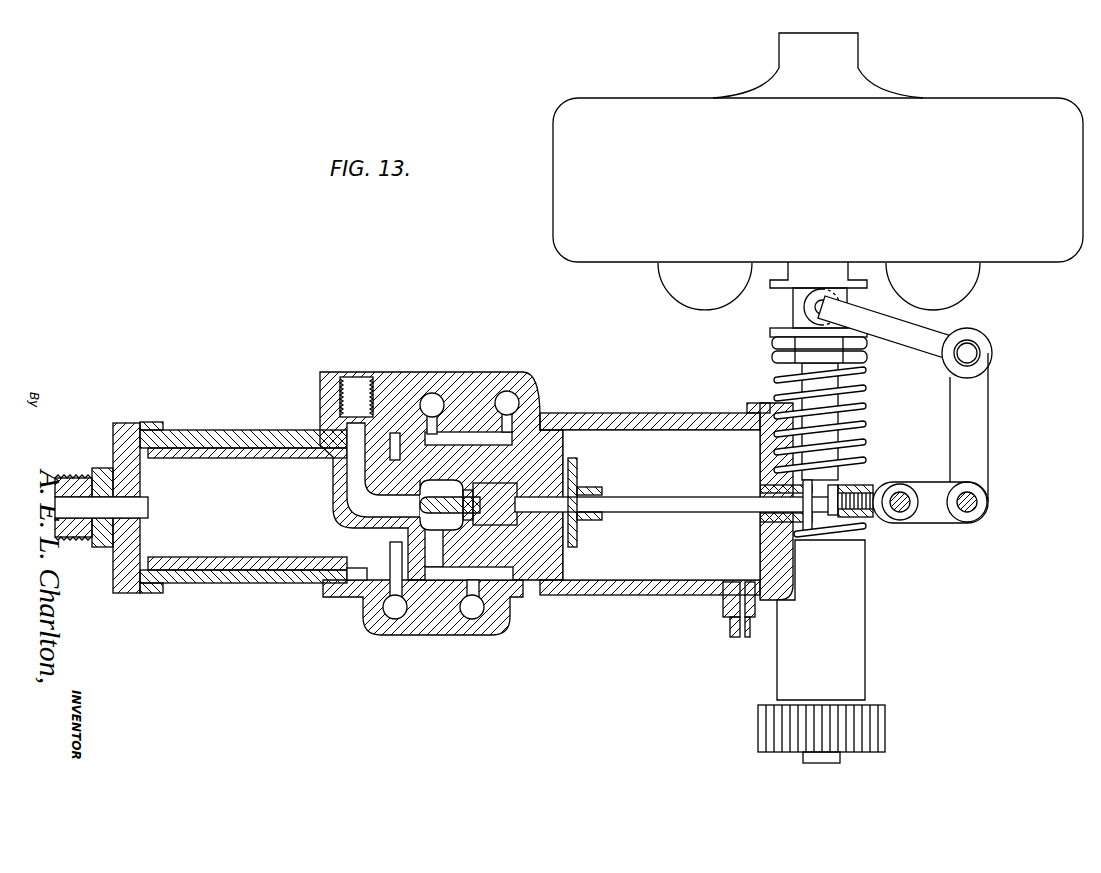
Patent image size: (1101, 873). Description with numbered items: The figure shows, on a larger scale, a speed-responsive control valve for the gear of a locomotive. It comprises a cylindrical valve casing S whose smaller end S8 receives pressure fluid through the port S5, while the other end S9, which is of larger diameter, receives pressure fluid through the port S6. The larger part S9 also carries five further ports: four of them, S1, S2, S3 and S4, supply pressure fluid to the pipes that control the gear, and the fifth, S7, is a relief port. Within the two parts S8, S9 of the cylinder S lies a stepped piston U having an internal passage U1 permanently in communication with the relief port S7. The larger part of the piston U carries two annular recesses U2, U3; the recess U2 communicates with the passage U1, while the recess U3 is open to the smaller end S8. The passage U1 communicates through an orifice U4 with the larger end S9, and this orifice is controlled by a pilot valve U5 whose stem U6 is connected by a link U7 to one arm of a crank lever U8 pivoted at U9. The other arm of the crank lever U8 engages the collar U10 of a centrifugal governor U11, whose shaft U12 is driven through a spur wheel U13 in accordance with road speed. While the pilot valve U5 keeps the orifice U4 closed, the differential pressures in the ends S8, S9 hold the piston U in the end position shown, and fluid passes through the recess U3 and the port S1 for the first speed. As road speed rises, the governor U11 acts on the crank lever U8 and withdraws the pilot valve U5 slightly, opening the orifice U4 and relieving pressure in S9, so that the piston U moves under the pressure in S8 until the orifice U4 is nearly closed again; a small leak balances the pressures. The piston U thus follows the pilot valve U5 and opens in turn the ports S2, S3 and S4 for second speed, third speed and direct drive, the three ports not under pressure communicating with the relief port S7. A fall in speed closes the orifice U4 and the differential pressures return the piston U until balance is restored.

The stepped piston U is at (547, 580).
The internal passage U1 is at (357, 465).
The annular recess U2 is at (465, 437).
The annular recess U3 is at (398, 438).
The orifice U4 is at (465, 517).
The pilot valve U5 is at (495, 495).
The stem U6 is at (665, 505).
The link U7 is at (927, 505).
The crank lever U8 is at (970, 415).
The pivot U9 is at (970, 355).
The collar U10 is at (800, 290).
The centrifugal governor U11 is at (563, 140).
The shaft U12 is at (833, 387).
The spur wheel U13 is at (882, 712).
The cylindrical valve casing S is at (413, 622).
The port S1 is at (393, 610).
The port S2 is at (431, 403).
The port S3 is at (473, 607).
The port S4 is at (508, 400).
The port S5 is at (73, 507).
The port S6 is at (743, 637).
The relief port S7 is at (357, 392).
The smaller end of cylinder S8 is at (217, 437).
The larger end of cylinder S9 is at (642, 585).